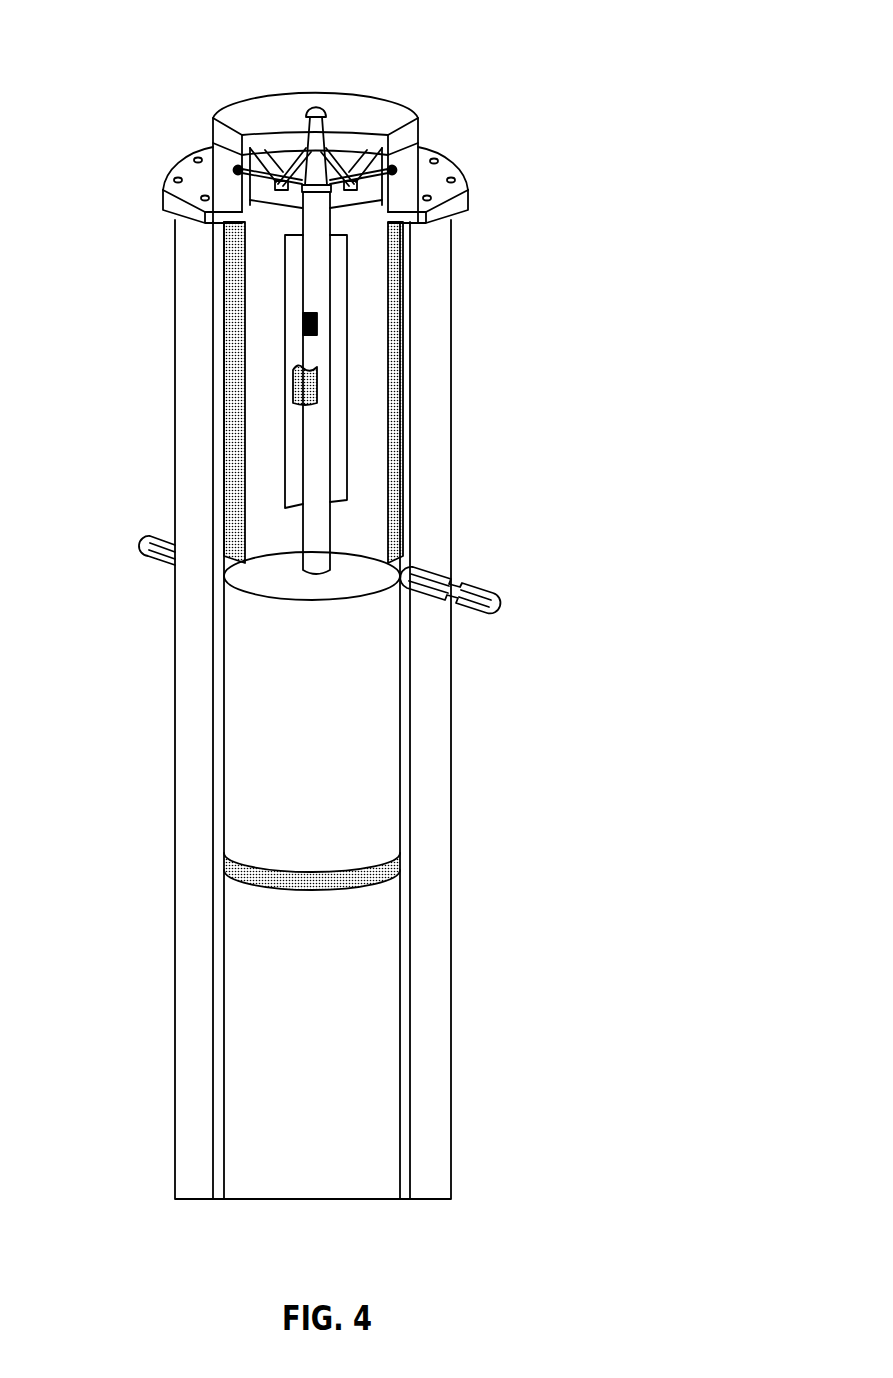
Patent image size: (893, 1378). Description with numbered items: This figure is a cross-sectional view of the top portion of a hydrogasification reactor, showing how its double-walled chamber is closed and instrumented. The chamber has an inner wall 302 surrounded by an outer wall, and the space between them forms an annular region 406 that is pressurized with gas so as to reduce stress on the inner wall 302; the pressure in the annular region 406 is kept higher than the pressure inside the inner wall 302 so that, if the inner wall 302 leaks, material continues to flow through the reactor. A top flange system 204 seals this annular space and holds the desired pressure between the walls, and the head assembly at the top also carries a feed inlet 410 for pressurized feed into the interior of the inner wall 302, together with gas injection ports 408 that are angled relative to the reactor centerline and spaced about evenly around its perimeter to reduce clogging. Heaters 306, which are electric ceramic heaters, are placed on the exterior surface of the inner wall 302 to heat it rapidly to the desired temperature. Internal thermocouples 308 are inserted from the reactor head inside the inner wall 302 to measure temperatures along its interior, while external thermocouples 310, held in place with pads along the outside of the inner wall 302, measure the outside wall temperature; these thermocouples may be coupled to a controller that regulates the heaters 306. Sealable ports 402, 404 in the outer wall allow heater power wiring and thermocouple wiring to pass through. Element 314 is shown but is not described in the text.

The top flange system 204 is at (462, 150).
The inner wall 302 is at (330, 525).
The heaters 306 is at (258, 270).
The internal thermocouples 308 is at (303, 324).
The external thermocouples 310 is at (298, 380).
The top cap 314 is at (390, 102).
The sealable port 402 is at (138, 556).
The sealable port 404 is at (488, 610).
The annular region 406 is at (396, 329).
The gas injection ports 408 is at (395, 172).
The feed inlet 410 is at (324, 99).